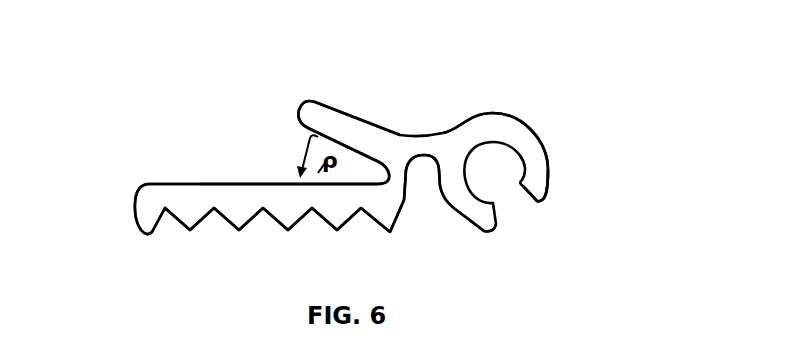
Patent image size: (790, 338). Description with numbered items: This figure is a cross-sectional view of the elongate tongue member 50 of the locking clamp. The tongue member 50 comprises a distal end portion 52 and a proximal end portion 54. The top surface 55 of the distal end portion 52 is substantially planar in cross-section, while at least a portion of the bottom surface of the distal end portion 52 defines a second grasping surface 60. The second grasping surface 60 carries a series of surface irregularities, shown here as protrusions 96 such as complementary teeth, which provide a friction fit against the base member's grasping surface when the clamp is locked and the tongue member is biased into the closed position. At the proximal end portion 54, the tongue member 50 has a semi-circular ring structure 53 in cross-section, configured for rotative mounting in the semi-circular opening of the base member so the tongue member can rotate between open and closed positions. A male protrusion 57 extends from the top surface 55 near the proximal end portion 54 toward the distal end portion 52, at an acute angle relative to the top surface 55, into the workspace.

The elongate tongue member 50 is at (567, 120).
The distal end portion 52 is at (153, 168).
The semi-circular ring structure 53 is at (555, 188).
The proximal end portion 54 is at (565, 157).
The top surface 55 is at (238, 182).
The male protrusion 57 is at (341, 104).
The second grasping surface 60 is at (225, 225).
The protrusions 96 is at (388, 230).